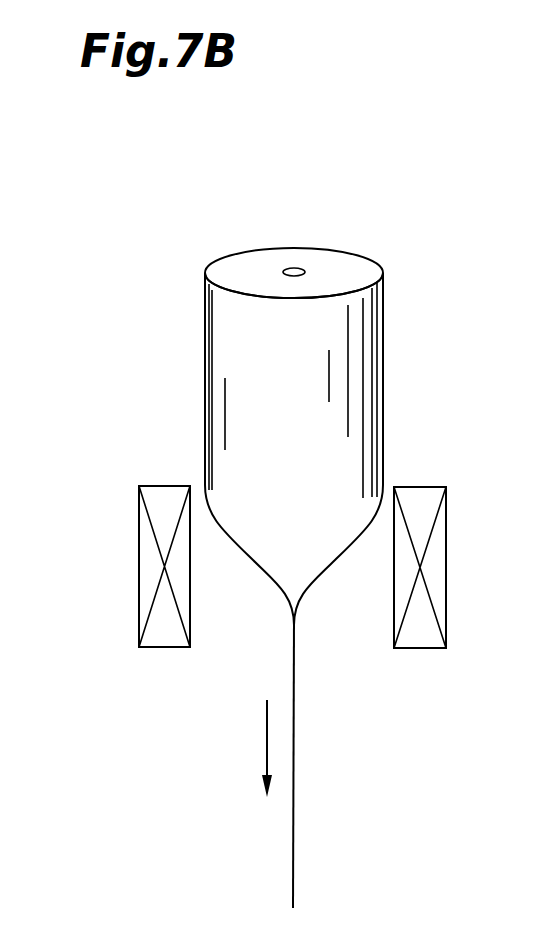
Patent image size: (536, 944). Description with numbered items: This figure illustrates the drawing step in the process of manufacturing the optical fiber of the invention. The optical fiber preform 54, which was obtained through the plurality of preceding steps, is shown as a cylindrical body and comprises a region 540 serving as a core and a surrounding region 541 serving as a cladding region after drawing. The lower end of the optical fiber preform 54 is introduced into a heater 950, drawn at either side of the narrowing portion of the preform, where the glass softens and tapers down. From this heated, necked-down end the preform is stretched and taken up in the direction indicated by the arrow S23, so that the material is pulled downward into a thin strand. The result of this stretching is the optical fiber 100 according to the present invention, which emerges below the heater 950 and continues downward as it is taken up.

The optical fiber preform 54 is at (400, 386).
The region serving as a core 540 is at (297, 268).
The region serving as a cladding region 541 is at (235, 270).
The heater 950 is at (139, 570).
The optical fiber 100 is at (293, 868).
The direction indicated by the arrow S23 is at (267, 741).